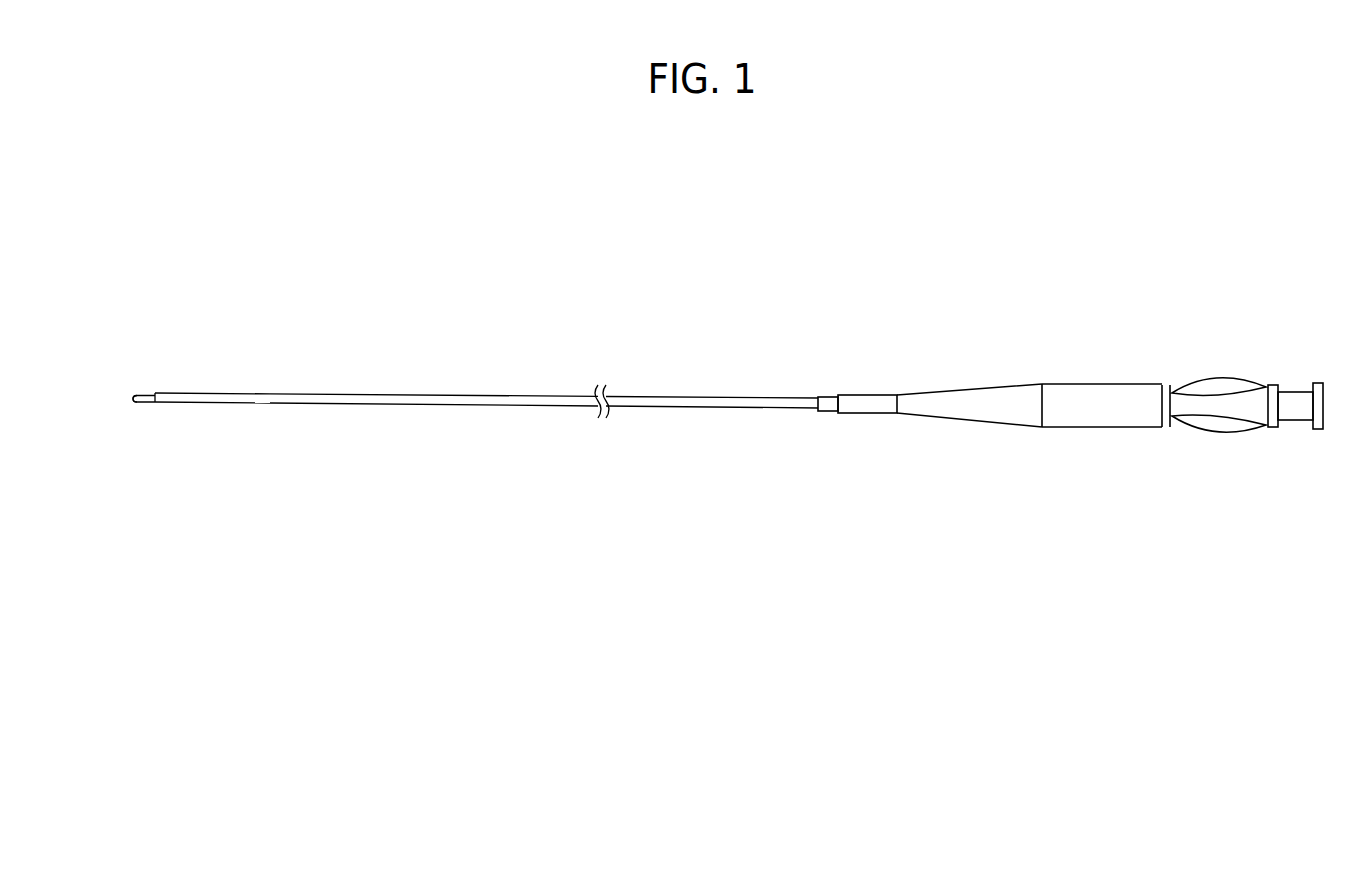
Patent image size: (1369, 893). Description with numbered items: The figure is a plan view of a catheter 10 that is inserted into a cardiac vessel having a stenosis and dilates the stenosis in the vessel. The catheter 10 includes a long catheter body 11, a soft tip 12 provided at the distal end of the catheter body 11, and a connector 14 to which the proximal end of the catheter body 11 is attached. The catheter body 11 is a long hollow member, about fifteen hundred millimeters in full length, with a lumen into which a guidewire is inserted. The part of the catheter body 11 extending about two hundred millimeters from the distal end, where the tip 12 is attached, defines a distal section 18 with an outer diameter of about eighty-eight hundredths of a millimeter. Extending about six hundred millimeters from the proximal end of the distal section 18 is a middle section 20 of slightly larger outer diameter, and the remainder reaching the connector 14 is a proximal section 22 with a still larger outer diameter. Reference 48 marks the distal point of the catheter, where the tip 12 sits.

The catheter 10 is at (778, 298).
The catheter body 11 is at (428, 276).
The soft tip 12 is at (142, 405).
The connector 14 is at (1087, 392).
The distal section 18 is at (206, 384).
The middle section 20 is at (317, 384).
The proximal section 22 is at (690, 385).
The distal end 48 is at (134, 397).